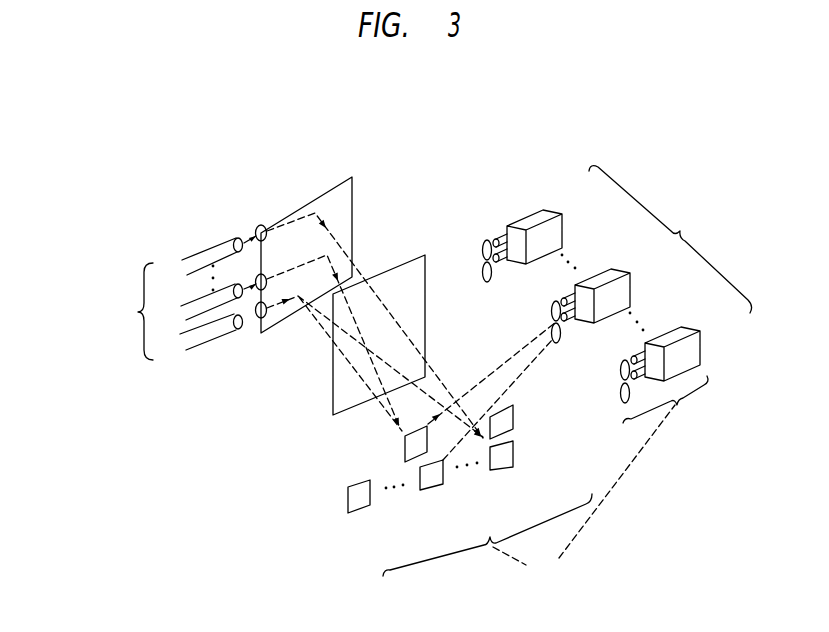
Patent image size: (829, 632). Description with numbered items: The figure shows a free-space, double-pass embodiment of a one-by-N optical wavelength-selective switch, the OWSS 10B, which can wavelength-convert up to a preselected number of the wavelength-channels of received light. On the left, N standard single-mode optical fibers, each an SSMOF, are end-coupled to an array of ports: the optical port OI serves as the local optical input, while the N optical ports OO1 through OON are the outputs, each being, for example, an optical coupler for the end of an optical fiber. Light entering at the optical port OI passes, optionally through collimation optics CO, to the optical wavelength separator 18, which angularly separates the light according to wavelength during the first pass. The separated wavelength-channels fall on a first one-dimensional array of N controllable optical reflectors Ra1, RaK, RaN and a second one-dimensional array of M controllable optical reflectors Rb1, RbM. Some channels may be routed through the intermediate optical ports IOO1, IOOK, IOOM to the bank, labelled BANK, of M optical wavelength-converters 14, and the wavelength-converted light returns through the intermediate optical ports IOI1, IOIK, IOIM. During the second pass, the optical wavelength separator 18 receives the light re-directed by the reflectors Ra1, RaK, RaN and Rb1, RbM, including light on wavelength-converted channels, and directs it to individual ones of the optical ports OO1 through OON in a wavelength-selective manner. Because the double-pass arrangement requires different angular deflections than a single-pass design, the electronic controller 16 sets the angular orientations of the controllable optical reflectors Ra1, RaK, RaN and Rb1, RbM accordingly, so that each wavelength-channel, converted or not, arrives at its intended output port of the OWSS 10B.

The optical wavelength separator 18 is at (333, 183).
The optical wavelength-converter 14 is at (683, 327).
The electronic controller 16 is at (557, 592).
The 1×N optical wavelength-selective switch (OWSS) 10B is at (248, 487).
The collimation optics CO is at (395, 350).
The first optical port OO1 is at (263, 226).
The N-th optical port OON is at (263, 274).
The optical port OI is at (265, 317).
The first intermediate optical port IOO1 is at (483, 247).
The K-th intermediate optical port IOOK is at (552, 316).
The M-th intermediate optical port IOOM is at (620, 367).
The first intermediate optical port IOI1 is at (482, 274).
The K-th intermediate optical port IOIK is at (552, 334).
The M-th intermediate optical port IOIM is at (620, 393).
The controllable optical reflector Rb1 is at (405, 446).
The controllable optical reflector RbM is at (513, 428).
The controllable optical reflector Ra1 is at (358, 513).
The controllable optical reflector RaK is at (431, 490).
The controllable optical reflector RaN is at (502, 470).
The standard single-mode optical fiber SSMOF is at (208, 343).
The bank of optical wavelength-converters BANK is at (670, 239).